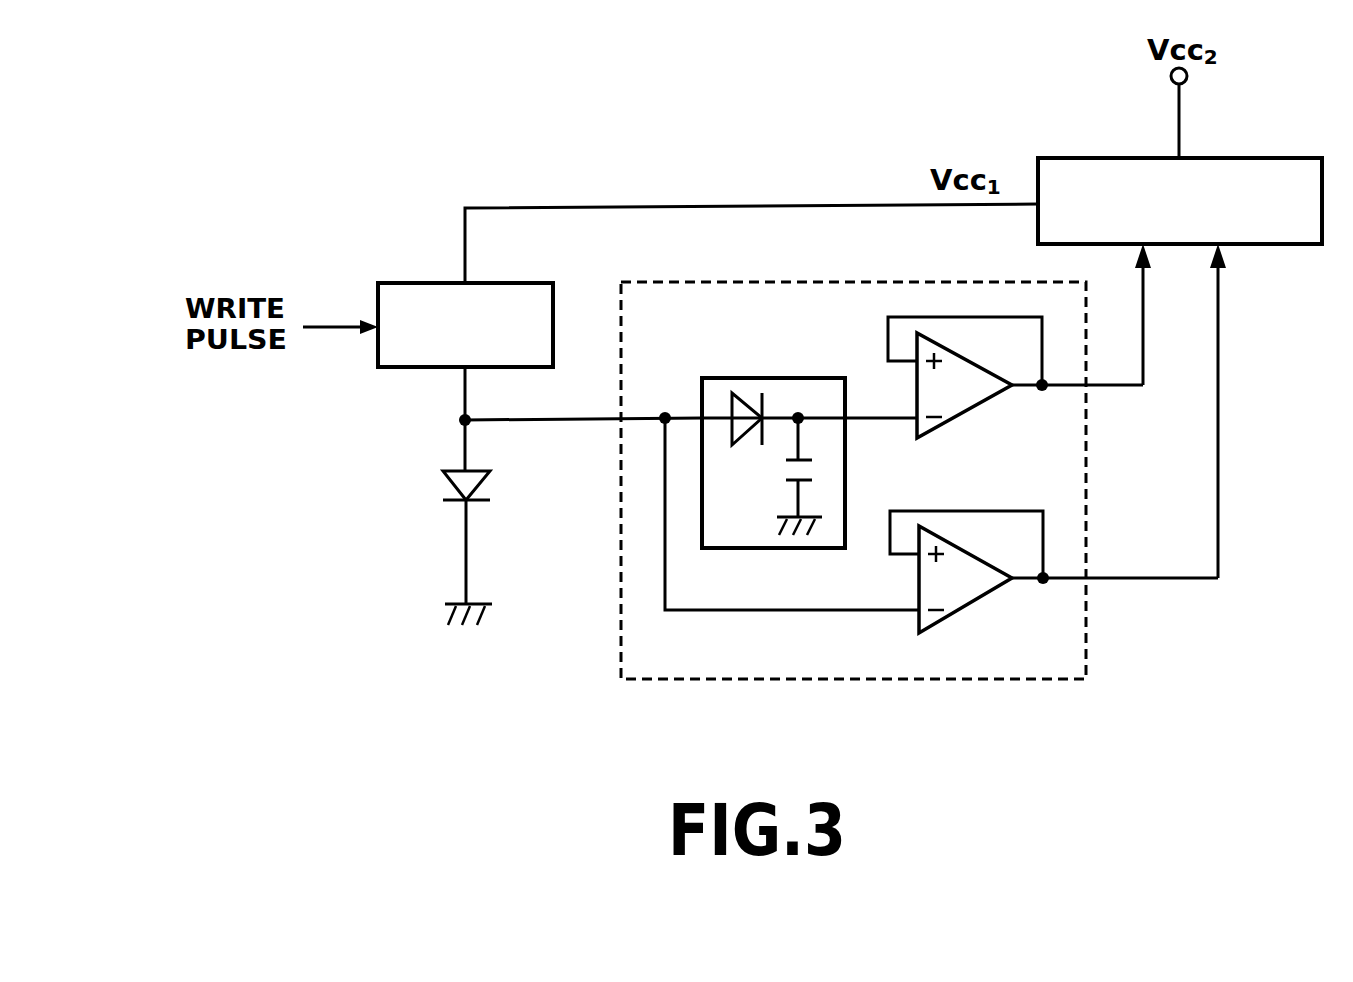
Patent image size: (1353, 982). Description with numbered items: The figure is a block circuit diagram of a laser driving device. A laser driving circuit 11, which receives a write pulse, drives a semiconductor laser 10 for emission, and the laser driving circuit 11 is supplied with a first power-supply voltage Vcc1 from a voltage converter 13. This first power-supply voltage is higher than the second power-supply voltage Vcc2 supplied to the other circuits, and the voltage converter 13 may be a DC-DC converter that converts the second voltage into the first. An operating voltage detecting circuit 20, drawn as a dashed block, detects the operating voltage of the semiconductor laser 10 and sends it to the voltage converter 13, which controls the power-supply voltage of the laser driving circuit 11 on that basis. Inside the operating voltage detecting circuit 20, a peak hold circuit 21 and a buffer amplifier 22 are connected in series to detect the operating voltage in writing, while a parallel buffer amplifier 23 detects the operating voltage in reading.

The semiconductor laser 10 is at (448, 482).
The laser driving circuit 11 is at (423, 282).
The voltage converter 13 is at (1257, 158).
The operating voltage detecting circuit 20 is at (1090, 465).
The peak hold circuit 21 is at (757, 378).
The buffer amplifier 22 is at (957, 413).
The buffer amplifier 23 is at (957, 610).